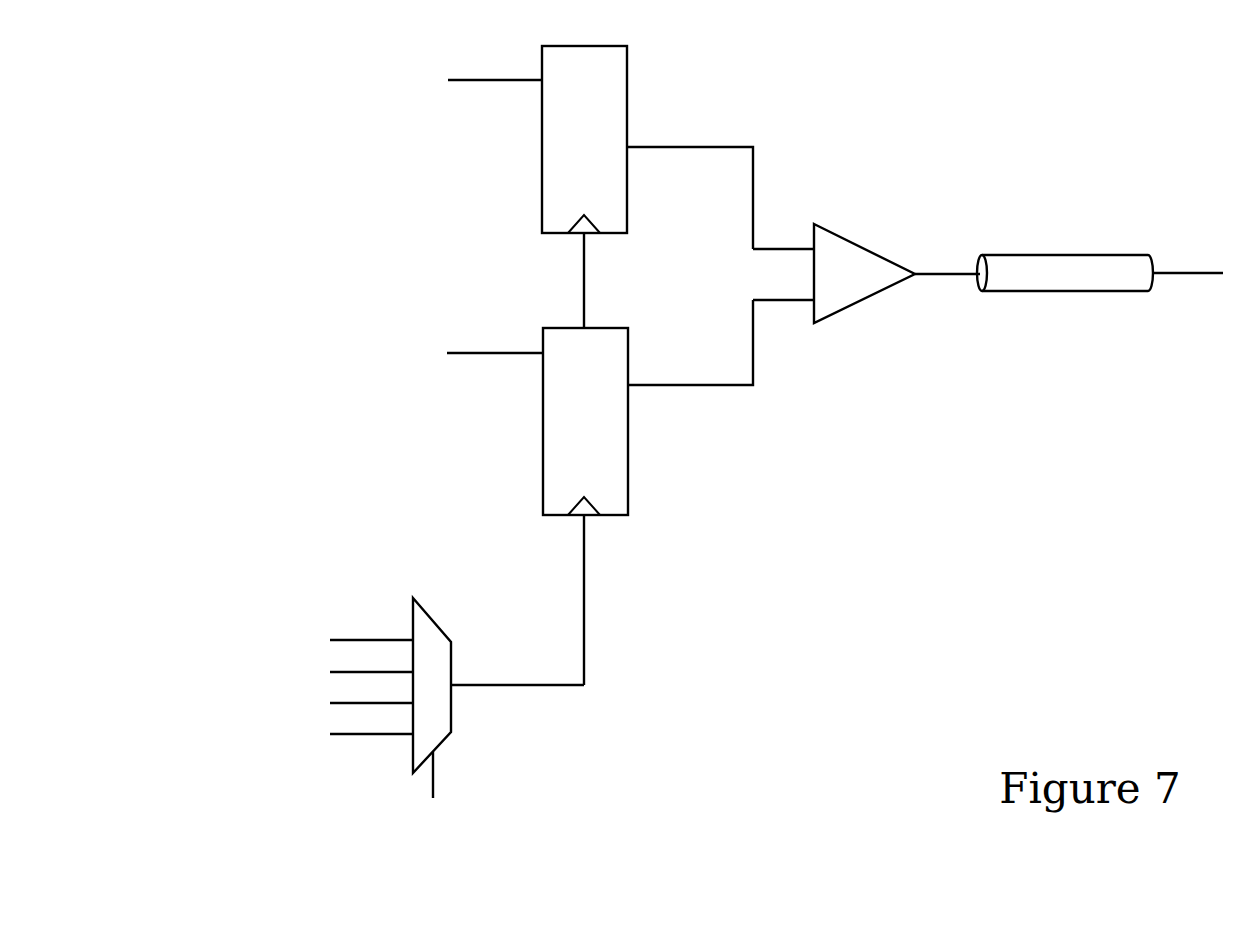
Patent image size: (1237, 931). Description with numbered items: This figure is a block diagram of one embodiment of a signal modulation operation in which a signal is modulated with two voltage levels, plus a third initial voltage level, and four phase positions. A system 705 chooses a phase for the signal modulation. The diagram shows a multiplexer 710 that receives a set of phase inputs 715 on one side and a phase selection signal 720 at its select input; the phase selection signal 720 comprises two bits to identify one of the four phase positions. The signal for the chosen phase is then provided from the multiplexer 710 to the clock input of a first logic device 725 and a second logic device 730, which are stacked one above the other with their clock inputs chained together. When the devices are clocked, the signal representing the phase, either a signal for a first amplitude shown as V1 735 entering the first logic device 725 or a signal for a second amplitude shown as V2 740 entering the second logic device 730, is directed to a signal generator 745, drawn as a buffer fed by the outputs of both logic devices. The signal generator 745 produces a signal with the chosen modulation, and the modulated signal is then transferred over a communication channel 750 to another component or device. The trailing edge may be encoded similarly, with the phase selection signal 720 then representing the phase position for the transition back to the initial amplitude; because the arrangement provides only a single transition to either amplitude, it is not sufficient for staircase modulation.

The system 705 is at (256, 92).
The multiplexer 710 is at (498, 685).
The phase inputs 715 is at (333, 670).
The phase selection signal 720 is at (436, 800).
The first logic device 725 is at (647, 187).
The second logic device 730 is at (648, 492).
The V1 735 is at (472, 78).
The V2 740 is at (476, 353).
The signal generator 745 is at (866, 273).
The communication channel 750 is at (1100, 273).